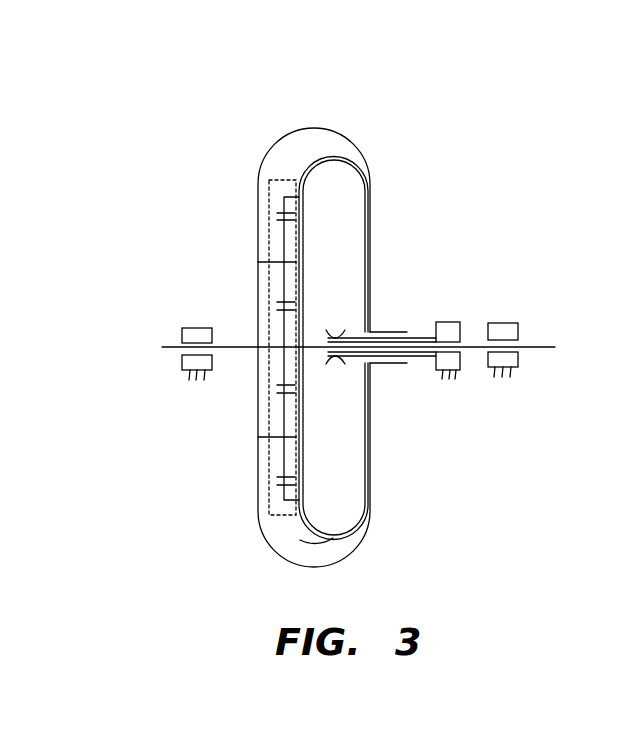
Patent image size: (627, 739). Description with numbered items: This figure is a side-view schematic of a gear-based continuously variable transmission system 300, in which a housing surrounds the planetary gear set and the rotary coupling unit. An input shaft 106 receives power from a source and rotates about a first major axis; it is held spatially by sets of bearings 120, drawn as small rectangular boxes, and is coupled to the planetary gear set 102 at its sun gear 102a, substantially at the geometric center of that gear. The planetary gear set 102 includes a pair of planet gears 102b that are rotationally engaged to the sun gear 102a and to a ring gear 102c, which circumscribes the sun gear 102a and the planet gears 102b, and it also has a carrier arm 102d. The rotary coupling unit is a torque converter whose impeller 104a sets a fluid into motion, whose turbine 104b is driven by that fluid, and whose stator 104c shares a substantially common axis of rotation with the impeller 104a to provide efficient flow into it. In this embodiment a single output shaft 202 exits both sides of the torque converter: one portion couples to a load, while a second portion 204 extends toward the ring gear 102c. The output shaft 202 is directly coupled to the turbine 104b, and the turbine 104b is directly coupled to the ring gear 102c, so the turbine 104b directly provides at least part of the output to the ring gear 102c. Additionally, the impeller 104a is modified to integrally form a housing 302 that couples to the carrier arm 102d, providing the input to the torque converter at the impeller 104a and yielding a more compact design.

The continuously variable transmission system 300 is at (500, 108).
The planetary gear set 102 is at (272, 172).
The impeller 104a is at (358, 168).
The turbine 104b is at (313, 167).
The stator 104c is at (447, 322).
The sun gear 102a is at (290, 310).
The planet gears 102b is at (290, 221).
The ring gear 102c is at (290, 213).
The carrier arm 102d is at (277, 264).
The input shaft 106 is at (163, 350).
The bearings 120 is at (182, 336).
The second portion of output shaft 204 is at (316, 345).
The output shaft 202 is at (530, 349).
The housing 302 is at (369, 516).